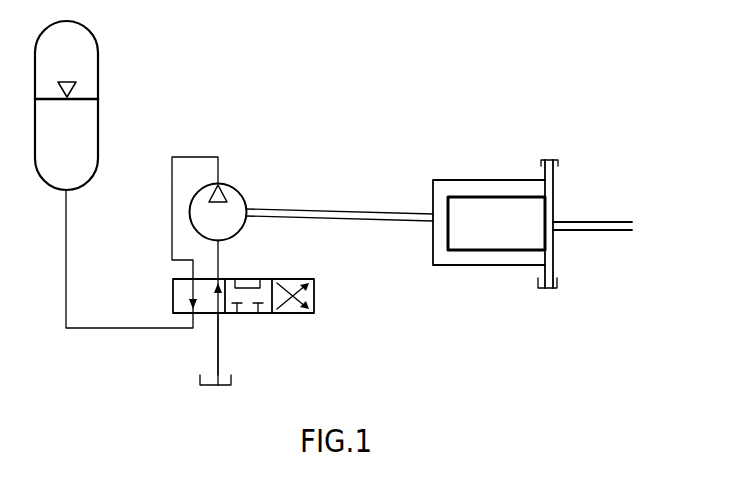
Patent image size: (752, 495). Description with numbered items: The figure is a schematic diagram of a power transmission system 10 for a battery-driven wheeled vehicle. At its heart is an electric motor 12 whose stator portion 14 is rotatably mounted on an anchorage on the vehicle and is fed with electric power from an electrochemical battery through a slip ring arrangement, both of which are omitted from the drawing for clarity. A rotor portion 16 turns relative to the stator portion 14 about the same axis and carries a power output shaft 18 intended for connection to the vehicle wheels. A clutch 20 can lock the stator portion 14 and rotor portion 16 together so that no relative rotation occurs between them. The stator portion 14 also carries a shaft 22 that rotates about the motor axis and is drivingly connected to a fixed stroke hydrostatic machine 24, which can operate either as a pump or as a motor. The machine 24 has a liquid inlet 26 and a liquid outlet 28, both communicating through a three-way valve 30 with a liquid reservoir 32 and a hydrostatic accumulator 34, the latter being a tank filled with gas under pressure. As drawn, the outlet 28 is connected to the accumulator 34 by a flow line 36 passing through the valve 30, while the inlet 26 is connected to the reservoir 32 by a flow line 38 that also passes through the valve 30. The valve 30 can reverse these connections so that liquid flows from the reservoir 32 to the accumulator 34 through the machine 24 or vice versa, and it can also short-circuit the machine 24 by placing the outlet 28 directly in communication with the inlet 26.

The power transmission system 10 is at (413, 57).
The electric motor 12 is at (472, 145).
The stator portion 14 is at (500, 266).
The rotor portion 16 is at (490, 208).
The power output shaft 18 is at (605, 219).
The clutch 20 is at (558, 167).
The shaft 22 is at (348, 209).
The fixed stroke hydrostatic machine 24 is at (244, 229).
The liquid inlet 26 is at (231, 247).
The liquid outlet 28 is at (229, 172).
The three-way valve 30 is at (291, 332).
The liquid reservoir 32 is at (244, 377).
The hydrostatic accumulator 34 is at (140, 30).
The flow line 36 is at (106, 330).
The flow line 38 is at (217, 347).